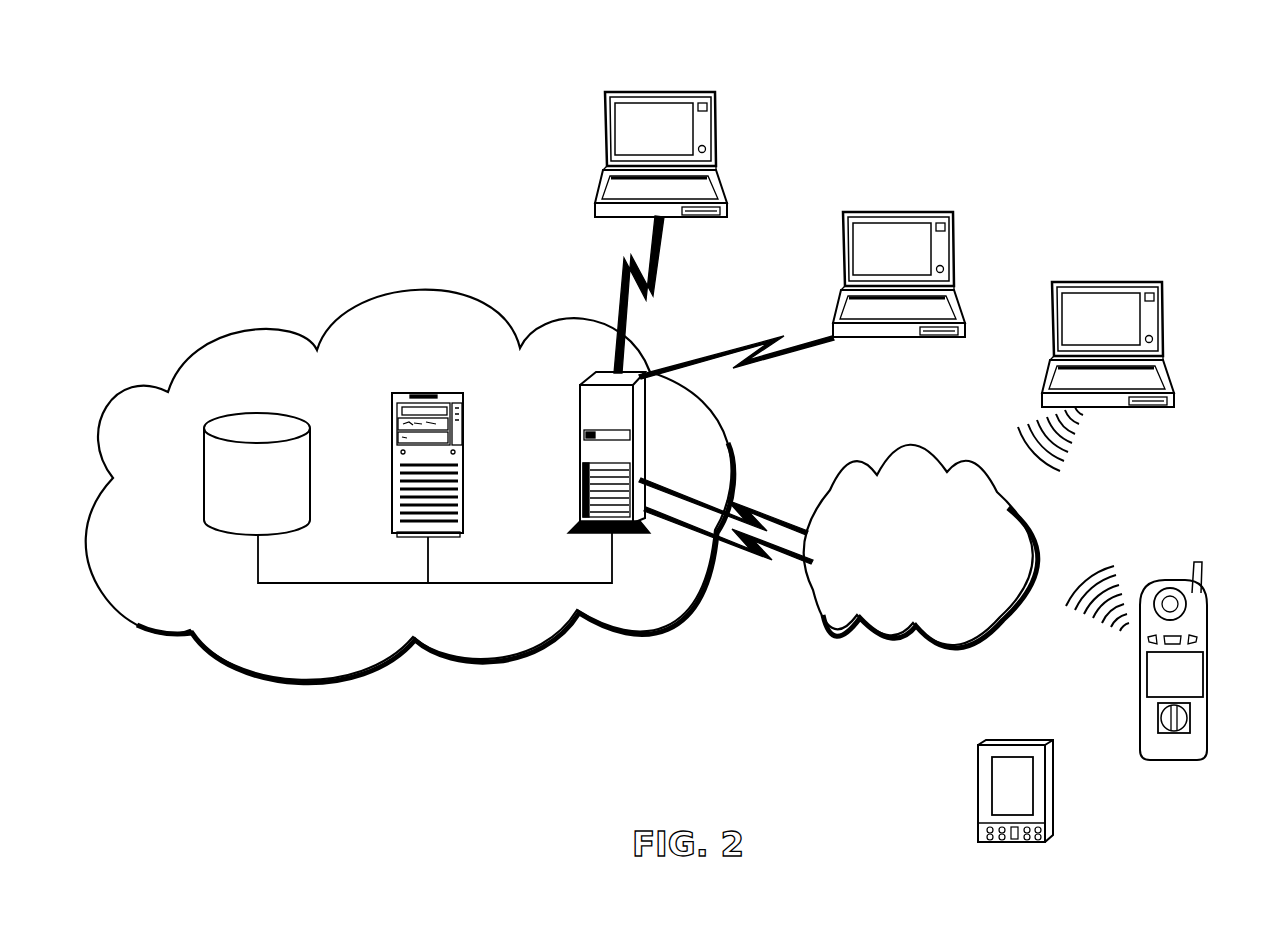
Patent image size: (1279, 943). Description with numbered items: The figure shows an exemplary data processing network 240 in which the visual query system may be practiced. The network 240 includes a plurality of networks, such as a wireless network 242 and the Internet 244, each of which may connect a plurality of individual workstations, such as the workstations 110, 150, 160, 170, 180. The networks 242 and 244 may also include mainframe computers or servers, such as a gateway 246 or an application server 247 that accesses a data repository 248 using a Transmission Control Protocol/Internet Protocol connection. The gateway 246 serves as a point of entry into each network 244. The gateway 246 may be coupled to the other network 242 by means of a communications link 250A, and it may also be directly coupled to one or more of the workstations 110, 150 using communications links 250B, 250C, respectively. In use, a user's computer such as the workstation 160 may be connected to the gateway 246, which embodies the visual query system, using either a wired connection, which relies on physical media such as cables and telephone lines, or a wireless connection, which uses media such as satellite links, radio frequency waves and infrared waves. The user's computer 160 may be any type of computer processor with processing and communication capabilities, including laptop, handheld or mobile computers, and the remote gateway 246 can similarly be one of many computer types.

The data processing network 240 is at (647, 37).
The workstation 110 is at (717, 112).
The workstation 150 is at (955, 232).
The workstation 160 is at (1163, 298).
The workstation 170 is at (1208, 638).
The workstation 180 is at (1055, 770).
The wireless network 242 is at (833, 624).
The Internet 244 is at (273, 676).
The gateway 246 is at (580, 428).
The application server 247 is at (391, 410).
The data repository 248 is at (202, 453).
The communications link 250A is at (726, 518).
The communications link 250B is at (615, 294).
The communications link 250C is at (736, 344).